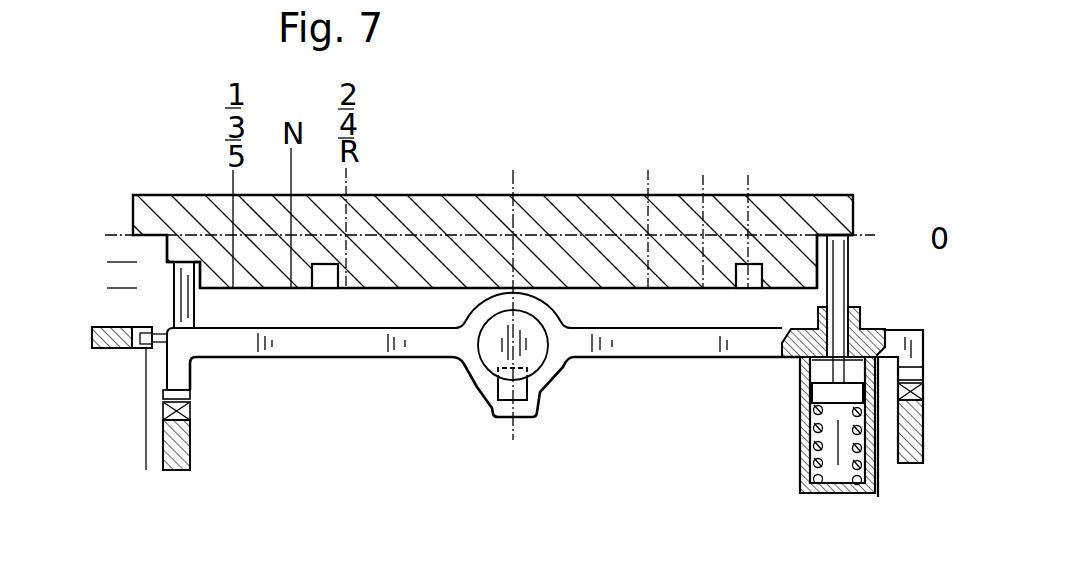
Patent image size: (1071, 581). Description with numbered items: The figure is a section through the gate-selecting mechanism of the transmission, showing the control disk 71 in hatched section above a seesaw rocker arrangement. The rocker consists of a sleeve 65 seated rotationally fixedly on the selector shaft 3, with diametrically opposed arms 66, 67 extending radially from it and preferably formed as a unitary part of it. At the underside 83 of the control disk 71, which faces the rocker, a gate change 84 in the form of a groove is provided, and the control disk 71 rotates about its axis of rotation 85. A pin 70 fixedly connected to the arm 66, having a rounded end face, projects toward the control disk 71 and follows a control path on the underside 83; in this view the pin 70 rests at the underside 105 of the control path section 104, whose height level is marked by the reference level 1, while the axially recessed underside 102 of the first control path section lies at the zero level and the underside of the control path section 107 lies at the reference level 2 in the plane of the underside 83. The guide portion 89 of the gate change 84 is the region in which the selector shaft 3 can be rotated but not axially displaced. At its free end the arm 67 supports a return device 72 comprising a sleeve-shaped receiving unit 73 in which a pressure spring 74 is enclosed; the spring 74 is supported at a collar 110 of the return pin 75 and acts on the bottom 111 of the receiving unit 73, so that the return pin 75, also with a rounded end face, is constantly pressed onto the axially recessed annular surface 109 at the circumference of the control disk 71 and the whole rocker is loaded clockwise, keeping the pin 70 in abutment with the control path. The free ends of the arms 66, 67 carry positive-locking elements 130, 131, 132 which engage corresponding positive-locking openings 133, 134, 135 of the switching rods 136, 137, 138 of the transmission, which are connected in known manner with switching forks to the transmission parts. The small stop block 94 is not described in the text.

The height level of underside 105 1 is at (135, 262).
The height level of underside 108 2 is at (135, 288).
The selector shaft 3 is at (490, 352).
The sleeve 65 is at (488, 384).
The arm 66 is at (322, 340).
The arm 67 is at (632, 343).
The pin 70 is at (192, 313).
The control disk 71 is at (566, 202).
The return device 72 is at (826, 502).
The receiving unit 73 is at (800, 368).
The pressure spring 74 is at (840, 392).
The return pin 75 is at (850, 235).
The underside 83 is at (590, 290).
The gate change 84 is at (742, 266).
The axis of rotation 85 is at (513, 174).
The guide portion 89 is at (320, 268).
The stop block 94 is at (757, 266).
The underside 102 is at (214, 245).
The control path section 104 is at (175, 248).
The underside 105 is at (194, 262).
The control path section 107 is at (222, 300).
The annular surface 109 is at (818, 237).
The collar 110 is at (800, 450).
The bottom 111 is at (816, 496).
The positive-locking element 130 is at (136, 349).
The positive-locking element 131 is at (191, 412).
The positive-locking element 132 is at (904, 335).
The positive-locking opening 133 is at (146, 470).
The positive-locking opening 134 is at (190, 464).
The positive-locking opening 135 is at (898, 443).
The switching rod 136 is at (106, 349).
The switching rod 137 is at (175, 470).
The switching rod 138 is at (913, 447).